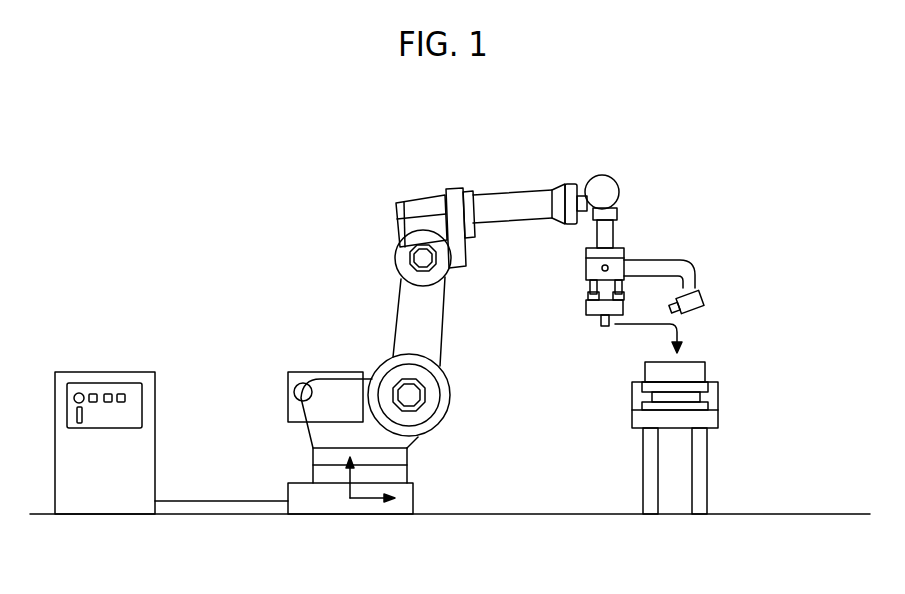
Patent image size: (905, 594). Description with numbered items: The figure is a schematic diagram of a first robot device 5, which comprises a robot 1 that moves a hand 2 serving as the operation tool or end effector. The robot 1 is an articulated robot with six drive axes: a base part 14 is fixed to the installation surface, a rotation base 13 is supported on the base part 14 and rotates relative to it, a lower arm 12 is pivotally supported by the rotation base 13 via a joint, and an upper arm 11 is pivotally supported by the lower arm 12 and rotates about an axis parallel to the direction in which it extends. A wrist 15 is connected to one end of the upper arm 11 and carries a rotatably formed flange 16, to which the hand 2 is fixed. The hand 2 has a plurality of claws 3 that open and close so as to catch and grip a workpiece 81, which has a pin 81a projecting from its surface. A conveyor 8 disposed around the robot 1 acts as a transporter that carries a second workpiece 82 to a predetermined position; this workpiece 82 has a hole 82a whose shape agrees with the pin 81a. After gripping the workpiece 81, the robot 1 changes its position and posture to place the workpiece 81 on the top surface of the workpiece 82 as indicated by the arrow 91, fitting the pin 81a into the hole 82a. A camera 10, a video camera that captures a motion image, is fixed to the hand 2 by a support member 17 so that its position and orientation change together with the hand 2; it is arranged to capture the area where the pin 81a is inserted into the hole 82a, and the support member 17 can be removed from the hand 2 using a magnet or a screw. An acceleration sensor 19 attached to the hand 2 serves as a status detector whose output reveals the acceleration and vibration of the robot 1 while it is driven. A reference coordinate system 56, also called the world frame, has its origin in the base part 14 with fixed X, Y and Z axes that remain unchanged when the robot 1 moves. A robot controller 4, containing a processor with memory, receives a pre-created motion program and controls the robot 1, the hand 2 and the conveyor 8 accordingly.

The robot 1 is at (456, 183).
The hand 2 is at (585, 266).
The claws 3 is at (588, 287).
The robot controller 4 is at (110, 372).
The first robot device 5 is at (258, 208).
The conveyor 8 is at (630, 418).
The camera 10 is at (705, 298).
The upper arm 11 is at (513, 200).
The lower arm 12 is at (405, 302).
The rotation base 13 is at (313, 428).
The base part 14 is at (288, 492).
The wrist 15 is at (611, 232).
The flange 16 is at (623, 250).
The support member 17 is at (681, 260).
The acceleration sensor 19 is at (603, 267).
The reference coordinate system 56 is at (356, 500).
The workpiece 81 is at (587, 307).
The pin 81a is at (597, 322).
The workpiece 82 is at (645, 380).
The hole 82a is at (676, 371).
The arrow 91 is at (680, 331).